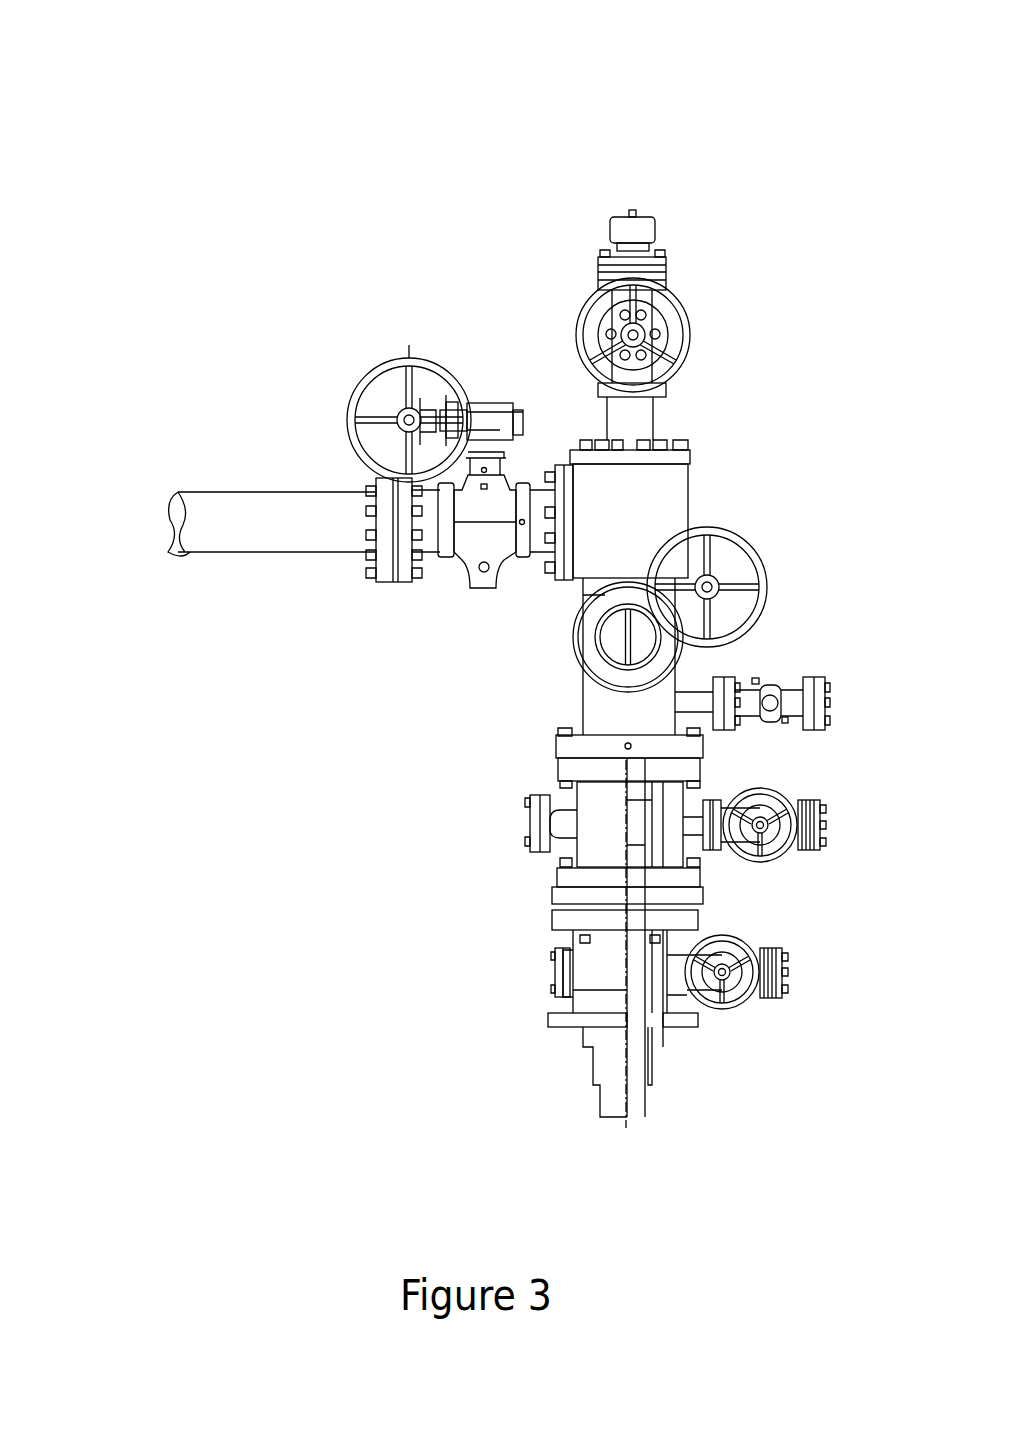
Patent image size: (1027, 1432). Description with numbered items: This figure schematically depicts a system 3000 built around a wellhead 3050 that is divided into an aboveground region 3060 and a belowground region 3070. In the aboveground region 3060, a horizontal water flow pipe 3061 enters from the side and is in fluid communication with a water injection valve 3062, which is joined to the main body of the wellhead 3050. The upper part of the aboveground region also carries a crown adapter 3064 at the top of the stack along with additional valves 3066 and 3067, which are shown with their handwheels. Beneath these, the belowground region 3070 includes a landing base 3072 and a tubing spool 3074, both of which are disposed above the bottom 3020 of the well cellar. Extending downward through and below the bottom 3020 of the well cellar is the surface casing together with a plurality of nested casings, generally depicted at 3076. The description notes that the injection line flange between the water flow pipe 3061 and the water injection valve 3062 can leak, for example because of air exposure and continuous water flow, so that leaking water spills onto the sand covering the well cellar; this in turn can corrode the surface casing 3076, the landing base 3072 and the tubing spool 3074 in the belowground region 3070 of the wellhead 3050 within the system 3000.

The system 3000 is at (232, 74).
The bottom of the well cellar 3020 is at (690, 1026).
The wellhead 3050 is at (838, 634).
The aboveground region 3060 is at (163, 210).
The water flow pipe 3061 is at (268, 490).
The water injection valve 3062 is at (410, 356).
The crown adapter 3064 is at (631, 214).
The additional valve 3066 is at (745, 548).
The additional valve 3067 is at (688, 312).
The belowground region 3070 is at (163, 712).
The landing base 3072 is at (750, 945).
The tubing spool 3074 is at (785, 800).
The surface casing and nested casings 3076 is at (578, 1077).